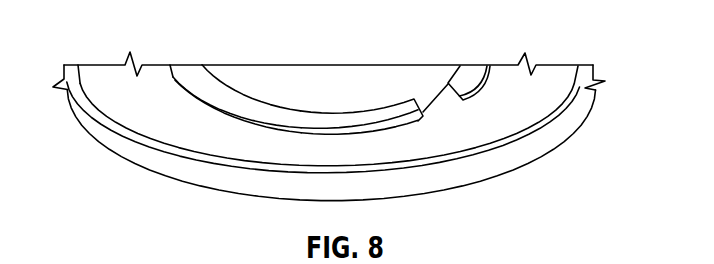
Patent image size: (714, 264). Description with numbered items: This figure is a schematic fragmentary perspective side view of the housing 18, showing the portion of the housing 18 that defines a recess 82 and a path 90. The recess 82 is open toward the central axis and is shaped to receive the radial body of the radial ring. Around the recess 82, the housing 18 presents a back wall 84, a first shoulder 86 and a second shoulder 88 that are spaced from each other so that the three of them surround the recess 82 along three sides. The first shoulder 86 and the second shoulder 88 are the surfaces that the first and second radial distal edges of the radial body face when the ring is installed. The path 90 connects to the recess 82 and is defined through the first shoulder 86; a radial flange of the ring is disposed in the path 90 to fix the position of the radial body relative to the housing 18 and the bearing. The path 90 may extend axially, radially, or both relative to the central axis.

The housing 18 is at (502, 162).
The recess 82 is at (550, 82).
The back wall 84 is at (342, 143).
The first shoulder 86 is at (473, 73).
The second shoulder 88 is at (225, 157).
The path 90 is at (435, 102).